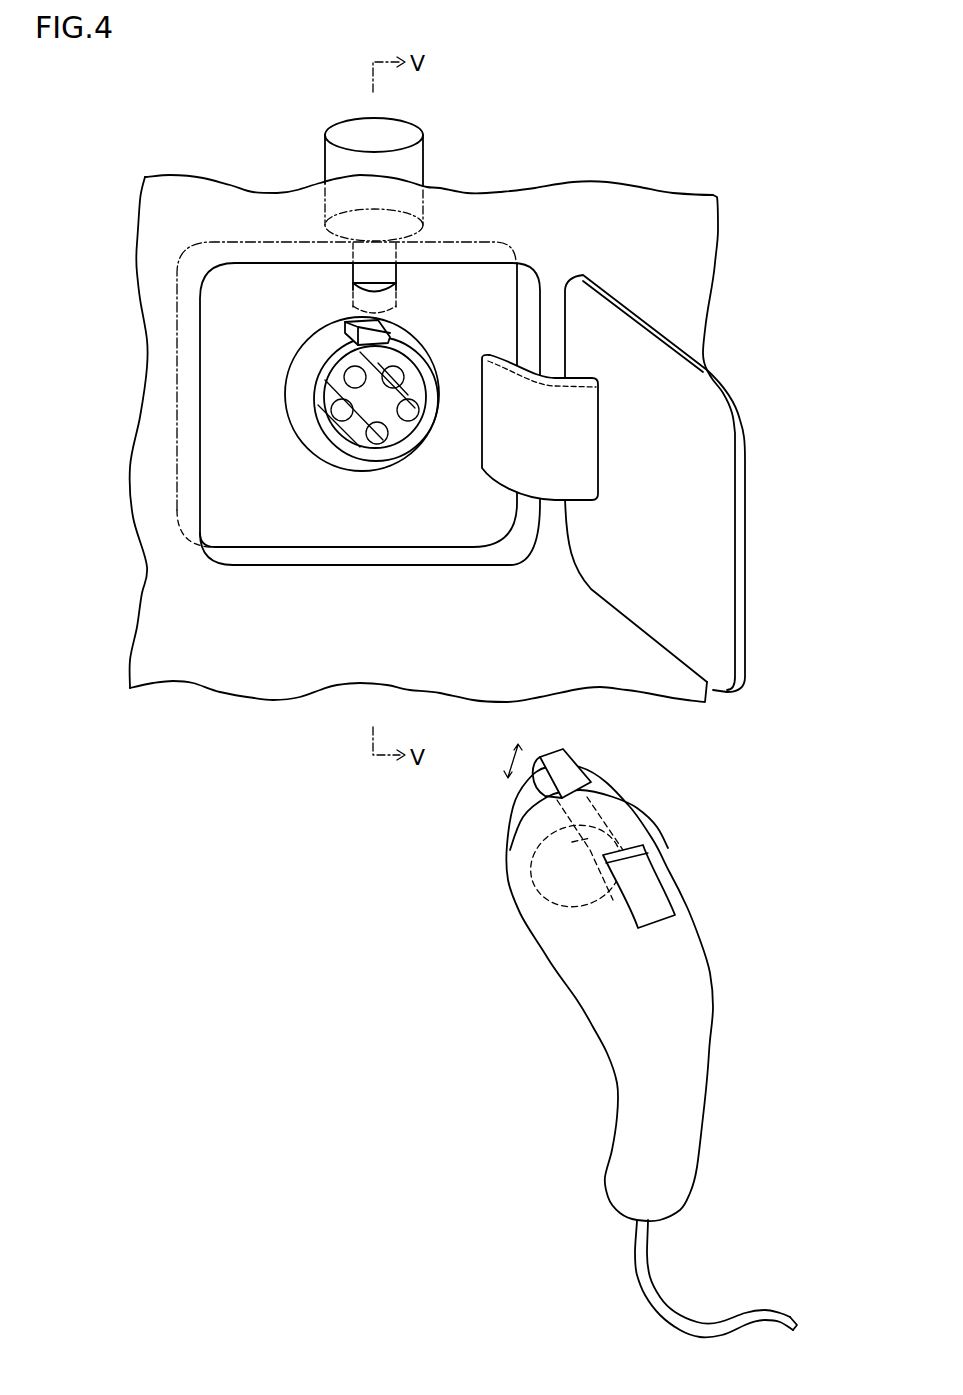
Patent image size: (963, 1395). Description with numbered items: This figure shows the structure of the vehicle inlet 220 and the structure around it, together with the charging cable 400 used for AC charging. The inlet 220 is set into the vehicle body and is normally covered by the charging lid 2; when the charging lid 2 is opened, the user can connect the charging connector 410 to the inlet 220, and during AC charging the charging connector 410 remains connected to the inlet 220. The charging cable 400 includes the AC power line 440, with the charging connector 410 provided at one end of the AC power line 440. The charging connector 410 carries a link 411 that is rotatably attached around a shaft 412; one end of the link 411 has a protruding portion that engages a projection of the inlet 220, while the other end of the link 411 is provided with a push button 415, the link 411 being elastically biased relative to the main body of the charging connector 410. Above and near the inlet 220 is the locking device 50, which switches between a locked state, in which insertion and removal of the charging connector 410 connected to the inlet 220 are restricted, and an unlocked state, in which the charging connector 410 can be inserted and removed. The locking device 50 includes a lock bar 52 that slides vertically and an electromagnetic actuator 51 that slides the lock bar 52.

The charging lid 2 is at (748, 555).
The locking device 50 is at (433, 192).
The electromagnetic actuator 51 is at (412, 163).
The lock bar 52 is at (377, 308).
The inlet 220 is at (325, 355).
The charging cable 400 is at (618, 1040).
The charging connector 410 is at (710, 978).
The link 411 is at (537, 785).
The shaft 412 is at (640, 802).
The push button 415 is at (647, 856).
The AC power line 440 is at (643, 1277).